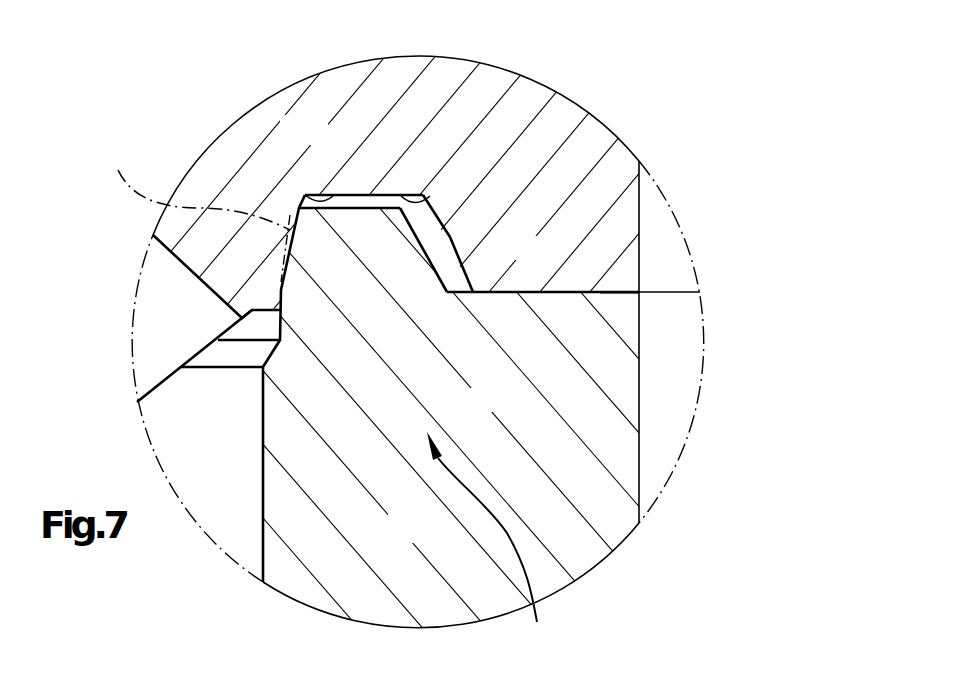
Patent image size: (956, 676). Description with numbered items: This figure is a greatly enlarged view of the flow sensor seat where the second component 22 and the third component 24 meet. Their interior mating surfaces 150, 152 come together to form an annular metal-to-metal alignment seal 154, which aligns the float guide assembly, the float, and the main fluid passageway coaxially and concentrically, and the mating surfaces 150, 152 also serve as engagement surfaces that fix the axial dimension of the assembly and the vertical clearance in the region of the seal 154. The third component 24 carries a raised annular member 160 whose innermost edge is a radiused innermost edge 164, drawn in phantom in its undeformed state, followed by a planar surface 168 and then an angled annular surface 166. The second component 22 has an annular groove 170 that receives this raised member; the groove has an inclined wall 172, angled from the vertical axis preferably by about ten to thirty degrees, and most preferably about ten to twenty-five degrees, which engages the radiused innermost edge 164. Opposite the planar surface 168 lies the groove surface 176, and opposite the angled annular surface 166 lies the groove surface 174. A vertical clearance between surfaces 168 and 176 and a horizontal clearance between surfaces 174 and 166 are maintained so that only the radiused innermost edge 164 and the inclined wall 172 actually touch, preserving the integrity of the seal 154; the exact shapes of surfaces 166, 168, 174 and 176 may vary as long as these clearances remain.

The second component 22 is at (321, 140).
The third component 24 is at (428, 538).
The interior mating surface 150 is at (600, 293).
The interior mating surface 152 is at (625, 292).
The annular metal-to-metal alignment seal 154 is at (491, 542).
The raised annular member 160 is at (353, 178).
The radiused innermost edge 164 is at (189, 213).
The angled annular surface 166 is at (429, 260).
The planar surface 168 is at (376, 194).
The annular groove 170 is at (422, 196).
The inclined wall 172 is at (283, 262).
The groove surface 174 is at (466, 258).
The groove surface 176 is at (303, 200).